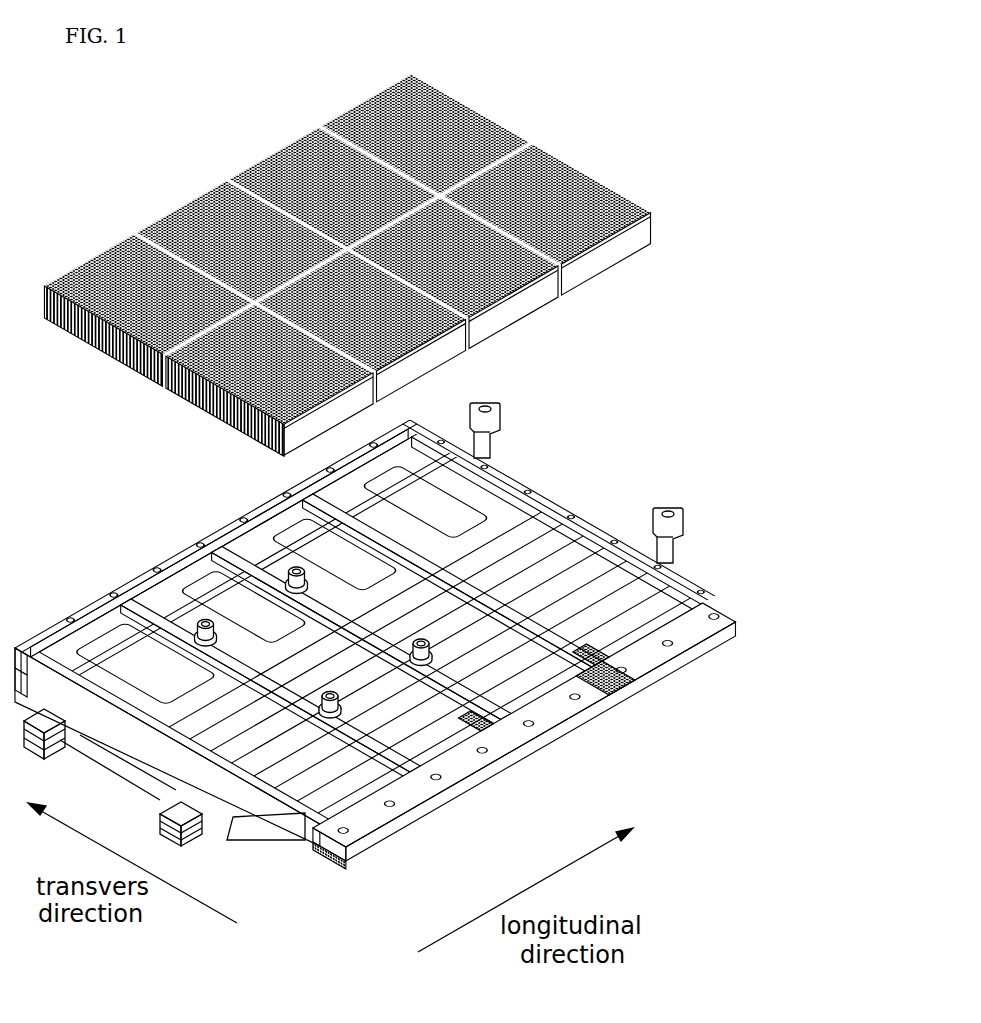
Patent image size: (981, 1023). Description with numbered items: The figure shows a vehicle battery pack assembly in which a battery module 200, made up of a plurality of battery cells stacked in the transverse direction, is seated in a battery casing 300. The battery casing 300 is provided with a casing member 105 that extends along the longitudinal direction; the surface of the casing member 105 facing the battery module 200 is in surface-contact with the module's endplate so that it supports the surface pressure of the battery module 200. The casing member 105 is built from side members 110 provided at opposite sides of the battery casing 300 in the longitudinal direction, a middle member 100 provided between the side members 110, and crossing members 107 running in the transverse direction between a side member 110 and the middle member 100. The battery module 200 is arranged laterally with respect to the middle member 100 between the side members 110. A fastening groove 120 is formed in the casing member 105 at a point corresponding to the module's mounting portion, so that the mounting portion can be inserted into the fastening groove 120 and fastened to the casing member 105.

The middle member 100 is at (375, 642).
The casing member 105 is at (517, 480).
The crossing members 107 is at (247, 553).
The side members 110 is at (402, 773).
The fastening groove 120 is at (487, 750).
The battery module 200 is at (548, 170).
The battery casing 300 is at (528, 557).